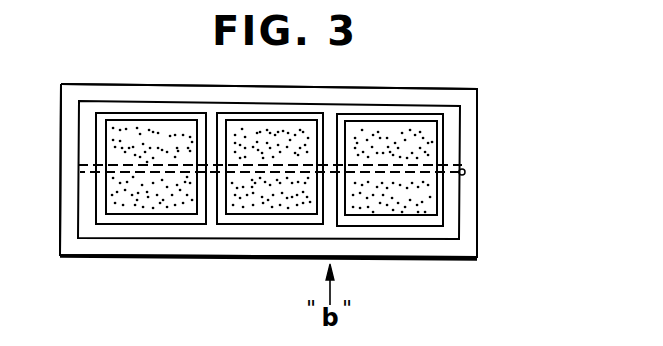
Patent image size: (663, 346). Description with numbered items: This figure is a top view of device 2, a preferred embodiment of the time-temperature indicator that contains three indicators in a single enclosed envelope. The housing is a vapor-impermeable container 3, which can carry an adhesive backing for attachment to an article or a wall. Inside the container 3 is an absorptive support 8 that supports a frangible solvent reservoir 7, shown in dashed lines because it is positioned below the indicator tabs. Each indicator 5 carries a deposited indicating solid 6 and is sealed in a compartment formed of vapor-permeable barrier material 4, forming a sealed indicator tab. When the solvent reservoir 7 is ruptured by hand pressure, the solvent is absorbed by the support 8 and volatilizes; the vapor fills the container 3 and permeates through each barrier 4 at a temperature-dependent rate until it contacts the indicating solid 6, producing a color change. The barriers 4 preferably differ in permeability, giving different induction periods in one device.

The device 2 is at (462, 265).
The vapor-impermeable container 3 is at (477, 236).
The barrier 4 is at (443, 211).
The indicator 5 is at (419, 122).
The indicating solid 6 is at (390, 133).
The solvent reservoir 7 is at (466, 171).
The absorptive support 8 is at (460, 117).